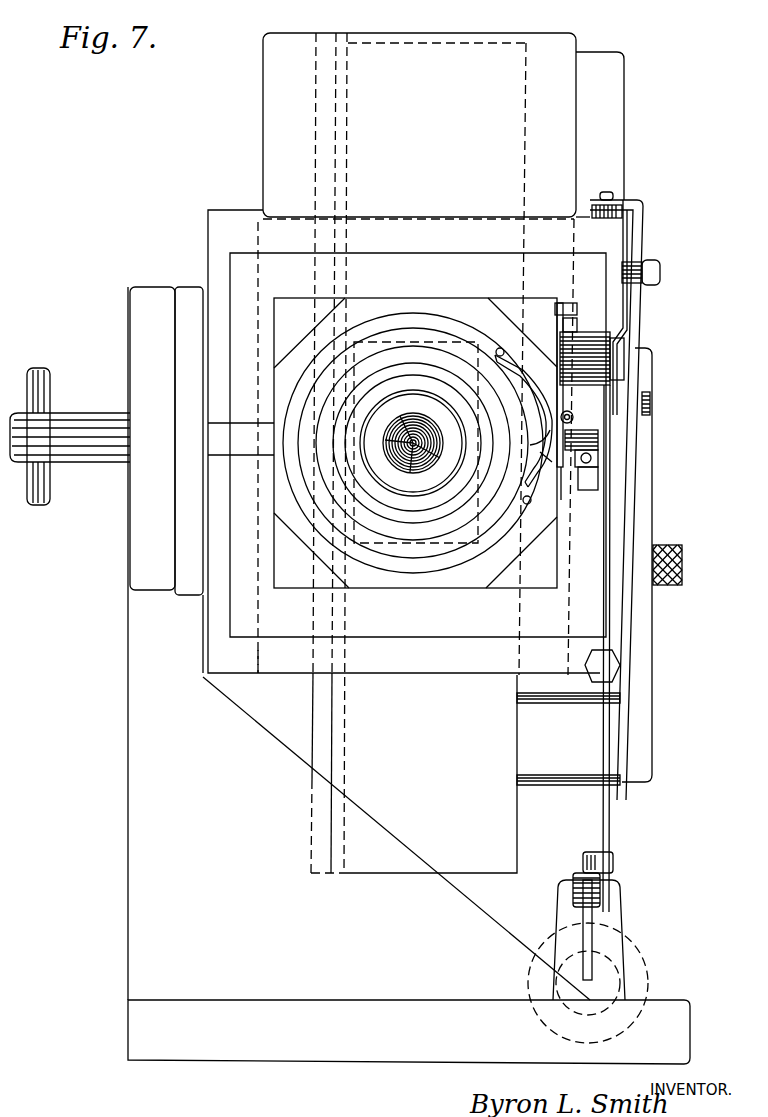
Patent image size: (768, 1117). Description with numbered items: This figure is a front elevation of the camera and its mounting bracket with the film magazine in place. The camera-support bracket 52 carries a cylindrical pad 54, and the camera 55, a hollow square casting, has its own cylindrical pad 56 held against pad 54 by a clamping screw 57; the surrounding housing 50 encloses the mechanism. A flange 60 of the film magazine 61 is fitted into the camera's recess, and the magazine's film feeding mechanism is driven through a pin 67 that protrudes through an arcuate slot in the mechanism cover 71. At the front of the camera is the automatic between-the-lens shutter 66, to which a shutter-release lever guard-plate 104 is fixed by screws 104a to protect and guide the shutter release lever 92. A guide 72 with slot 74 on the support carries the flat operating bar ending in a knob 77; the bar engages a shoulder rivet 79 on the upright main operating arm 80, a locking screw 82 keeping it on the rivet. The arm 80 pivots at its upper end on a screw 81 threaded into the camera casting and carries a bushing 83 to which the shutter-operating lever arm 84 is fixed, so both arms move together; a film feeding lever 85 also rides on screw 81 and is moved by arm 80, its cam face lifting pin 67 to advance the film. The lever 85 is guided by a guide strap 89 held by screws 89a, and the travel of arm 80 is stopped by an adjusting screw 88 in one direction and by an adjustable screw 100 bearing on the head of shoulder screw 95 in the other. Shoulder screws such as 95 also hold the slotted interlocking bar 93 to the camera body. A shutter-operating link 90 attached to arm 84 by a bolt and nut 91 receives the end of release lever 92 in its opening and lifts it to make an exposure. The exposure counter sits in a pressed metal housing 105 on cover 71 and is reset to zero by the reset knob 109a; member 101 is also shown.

The housing 50 is at (229, 232).
The camera-support bracket 52 is at (270, 1045).
The cylindrical pad 54 is at (150, 298).
The camera 55 is at (292, 622).
The cylindrical pad 56 is at (190, 298).
The clamping screw 57 is at (90, 415).
The flange 60 is at (550, 113).
The film magazine 61 is at (425, 840).
The between-the-lens shutter 66 is at (388, 560).
The pin 67 is at (662, 273).
The mechanism cover 71 is at (608, 161).
The guide 72 is at (620, 897).
The slot 74 is at (583, 935).
The knob 77 is at (640, 970).
The shoulder rivet 79 is at (575, 893).
The main operating arm 80 is at (600, 823).
The screw 81 is at (620, 350).
The locking screw 82 is at (615, 860).
The bushing 83 is at (575, 395).
The shutter-operating lever arm 84 is at (556, 318).
The film feeding lever 85 is at (614, 333).
The adjusting screw 88 is at (612, 665).
The guide strap 89 is at (640, 238).
The screw 89a is at (615, 196).
The shutter-operating link 90 is at (558, 342).
The bolt and nut 91 is at (560, 305).
The shutter release lever 92 is at (540, 440).
The interlocking bar 93 is at (563, 500).
The shoulder screw 95 is at (600, 455).
The adjustable screw 100 is at (596, 465).
The support 101 is at (590, 490).
The shutter-release lever guard-plate 104 is at (528, 400).
The screw 104a is at (530, 510).
The counter housing 105 is at (640, 503).
The reset knob 109a is at (684, 566).